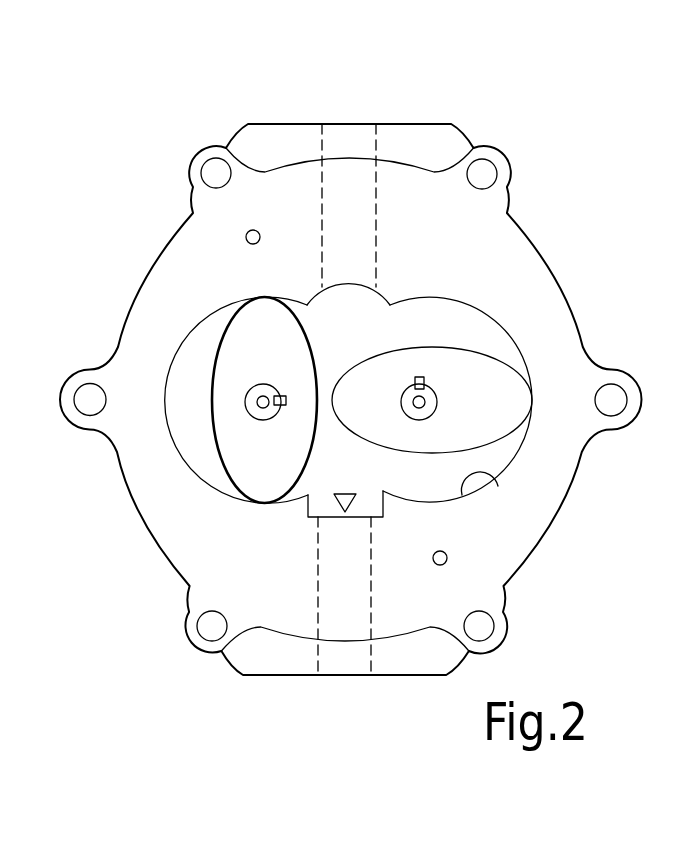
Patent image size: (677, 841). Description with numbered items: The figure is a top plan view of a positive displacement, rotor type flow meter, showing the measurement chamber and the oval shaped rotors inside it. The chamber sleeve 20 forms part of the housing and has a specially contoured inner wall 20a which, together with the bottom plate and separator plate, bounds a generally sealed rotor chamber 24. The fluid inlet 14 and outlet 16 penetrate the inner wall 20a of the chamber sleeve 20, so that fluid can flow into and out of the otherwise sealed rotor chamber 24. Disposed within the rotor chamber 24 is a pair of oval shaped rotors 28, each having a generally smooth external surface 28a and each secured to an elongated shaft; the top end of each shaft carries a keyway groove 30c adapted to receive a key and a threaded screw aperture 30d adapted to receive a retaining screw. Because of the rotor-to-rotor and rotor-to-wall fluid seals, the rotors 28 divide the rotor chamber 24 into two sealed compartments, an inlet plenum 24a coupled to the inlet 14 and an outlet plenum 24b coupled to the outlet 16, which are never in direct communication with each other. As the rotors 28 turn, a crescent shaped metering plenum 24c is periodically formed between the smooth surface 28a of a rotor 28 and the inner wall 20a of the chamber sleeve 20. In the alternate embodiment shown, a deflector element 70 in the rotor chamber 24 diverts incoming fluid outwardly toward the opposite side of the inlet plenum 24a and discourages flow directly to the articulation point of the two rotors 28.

The inlet 14 is at (340, 648).
The outlet 16 is at (347, 145).
The chamber sleeve 20 is at (561, 282).
The inner wall 20a is at (496, 479).
The rotor chamber 24 is at (341, 394).
The inlet plenum 24a is at (332, 465).
The outlet plenum 24b is at (398, 322).
The metering plenum 24c is at (188, 353).
The oval shaped rotor 28 is at (337, 377).
The external surface 28a is at (217, 440).
The keyway groove 30c is at (423, 378).
The threaded screw aperture 30d is at (425, 406).
The deflector element 70 is at (337, 498).